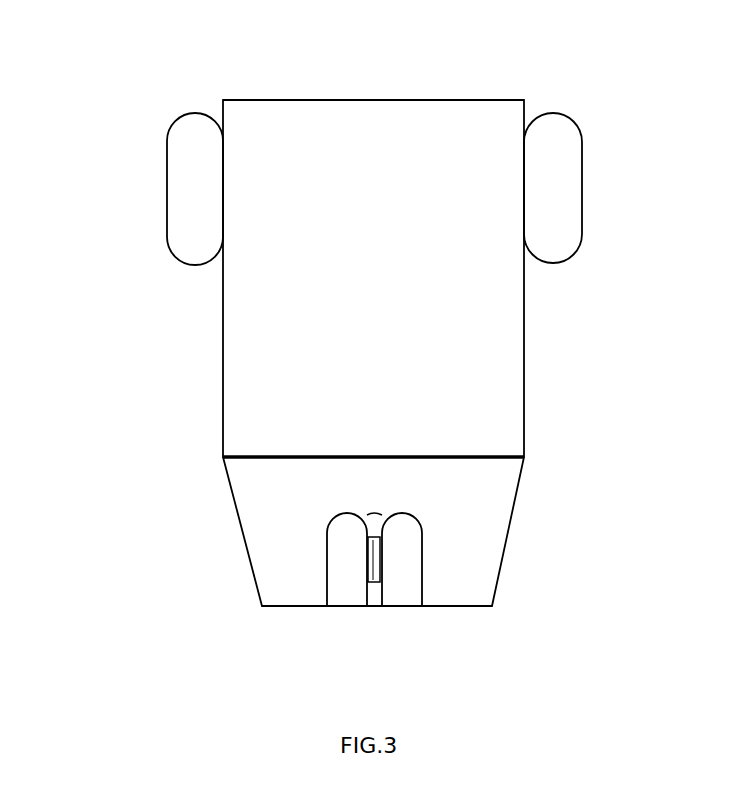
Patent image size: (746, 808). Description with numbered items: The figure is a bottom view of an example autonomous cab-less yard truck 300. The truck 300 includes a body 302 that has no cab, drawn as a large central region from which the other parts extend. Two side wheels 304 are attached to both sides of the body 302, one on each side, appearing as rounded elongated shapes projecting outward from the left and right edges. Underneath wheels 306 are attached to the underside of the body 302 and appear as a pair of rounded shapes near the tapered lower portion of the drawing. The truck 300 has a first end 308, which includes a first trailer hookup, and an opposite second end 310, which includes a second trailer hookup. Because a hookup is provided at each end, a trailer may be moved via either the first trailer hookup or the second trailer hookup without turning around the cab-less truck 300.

The autonomous cab-less yard truck 300 is at (200, 54).
The body 302 is at (383, 289).
The side wheels 304 is at (180, 185).
The underneath wheels 306 is at (342, 596).
The first end 308 is at (307, 607).
The second end 310 is at (375, 99).